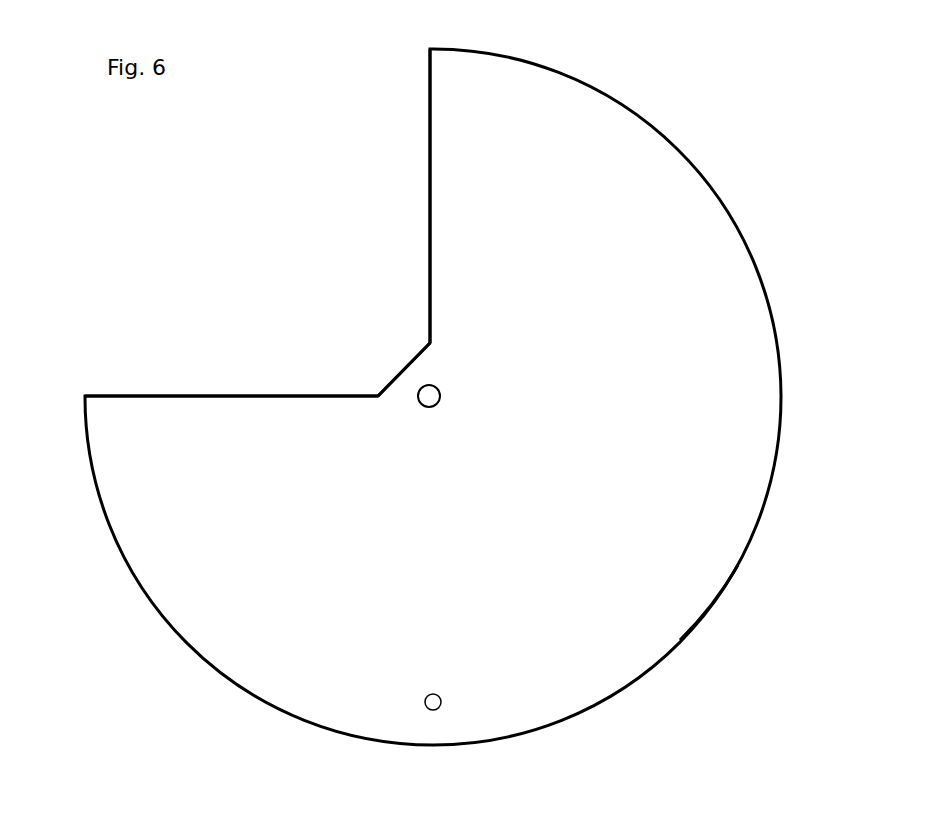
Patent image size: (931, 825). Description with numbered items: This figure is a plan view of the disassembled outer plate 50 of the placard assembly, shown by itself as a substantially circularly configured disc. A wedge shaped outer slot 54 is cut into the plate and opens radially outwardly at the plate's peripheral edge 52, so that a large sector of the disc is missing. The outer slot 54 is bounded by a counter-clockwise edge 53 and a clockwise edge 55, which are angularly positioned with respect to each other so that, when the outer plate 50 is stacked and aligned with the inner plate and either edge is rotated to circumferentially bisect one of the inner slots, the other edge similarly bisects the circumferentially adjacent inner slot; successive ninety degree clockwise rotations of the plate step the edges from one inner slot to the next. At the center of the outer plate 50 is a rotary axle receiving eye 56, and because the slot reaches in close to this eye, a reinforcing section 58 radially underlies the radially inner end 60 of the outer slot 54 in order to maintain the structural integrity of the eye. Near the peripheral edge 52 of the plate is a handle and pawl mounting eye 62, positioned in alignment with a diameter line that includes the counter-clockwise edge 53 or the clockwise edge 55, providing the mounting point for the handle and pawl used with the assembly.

The outer plate 50 is at (587, 277).
The peripheral edge 52 is at (738, 565).
The counter-clockwise edge 53 is at (177, 395).
The outer slot 54 is at (262, 263).
The clockwise edge 55 is at (430, 183).
The rotary axle receiving eye 56 is at (429, 406).
The reinforcing section 58 is at (407, 385).
The radially inner end 60 is at (400, 373).
The handle and pawl mounting eye 62 is at (441, 702).